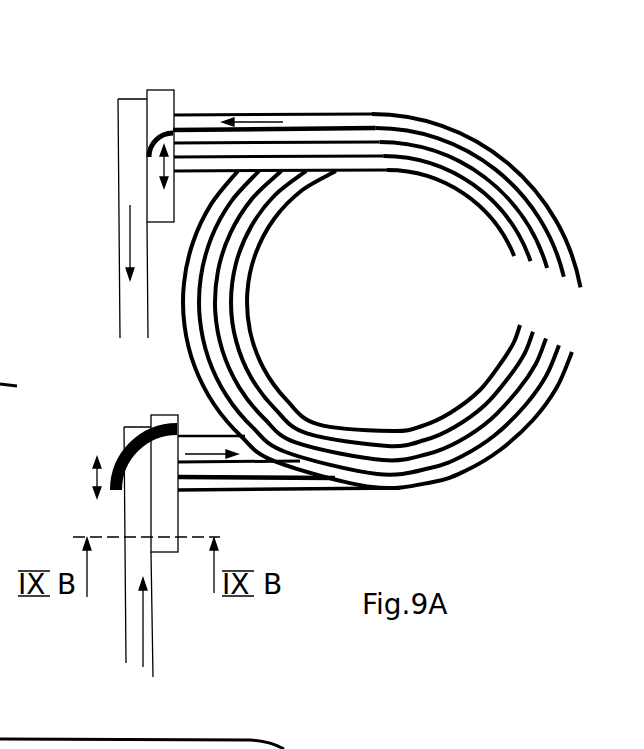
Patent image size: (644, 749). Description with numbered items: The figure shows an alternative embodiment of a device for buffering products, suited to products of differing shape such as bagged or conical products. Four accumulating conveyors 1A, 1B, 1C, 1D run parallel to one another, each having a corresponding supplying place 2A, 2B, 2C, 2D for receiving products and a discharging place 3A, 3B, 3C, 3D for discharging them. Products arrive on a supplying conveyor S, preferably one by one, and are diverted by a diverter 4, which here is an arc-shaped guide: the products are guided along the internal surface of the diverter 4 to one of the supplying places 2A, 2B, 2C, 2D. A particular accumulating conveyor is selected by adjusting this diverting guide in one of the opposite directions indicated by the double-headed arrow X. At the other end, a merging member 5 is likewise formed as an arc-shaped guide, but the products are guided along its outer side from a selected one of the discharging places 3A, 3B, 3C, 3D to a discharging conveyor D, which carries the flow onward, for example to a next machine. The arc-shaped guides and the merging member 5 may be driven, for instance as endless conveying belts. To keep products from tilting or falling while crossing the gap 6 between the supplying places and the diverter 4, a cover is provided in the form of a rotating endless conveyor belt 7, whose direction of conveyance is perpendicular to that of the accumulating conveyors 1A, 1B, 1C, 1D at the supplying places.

The accumulating conveyor 1A is at (478, 143).
The accumulating conveyor 1B is at (457, 150).
The accumulating conveyor 1C is at (425, 150).
The accumulating conveyor 1D is at (403, 163).
The supplying place 2A is at (293, 480).
The supplying place 2B is at (258, 467).
The supplying place 2C is at (223, 467).
The supplying place 2D is at (190, 440).
The discharging place 3A is at (197, 120).
The discharging place 3B is at (240, 135).
The discharging place 3C is at (282, 147).
The discharging place 3D is at (323, 160).
The diverter 4 is at (125, 432).
The merging member 5 is at (157, 130).
The gap 6 is at (177, 482).
The endless conveyor belt 7 is at (162, 498).
The discharging conveyor D is at (128, 116).
The supplying conveyor S is at (133, 627).
The double-headed arrow X is at (84, 477).